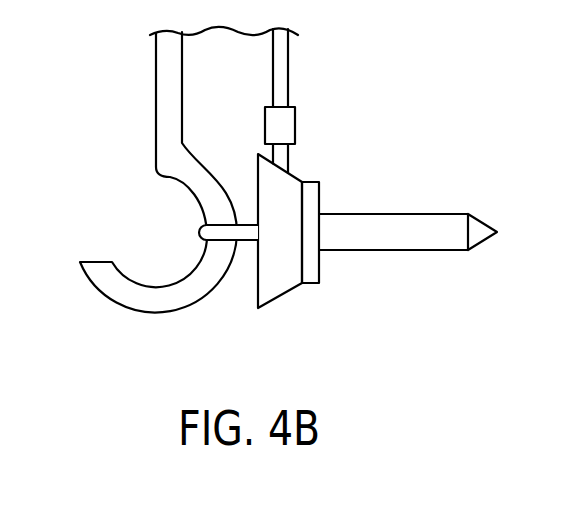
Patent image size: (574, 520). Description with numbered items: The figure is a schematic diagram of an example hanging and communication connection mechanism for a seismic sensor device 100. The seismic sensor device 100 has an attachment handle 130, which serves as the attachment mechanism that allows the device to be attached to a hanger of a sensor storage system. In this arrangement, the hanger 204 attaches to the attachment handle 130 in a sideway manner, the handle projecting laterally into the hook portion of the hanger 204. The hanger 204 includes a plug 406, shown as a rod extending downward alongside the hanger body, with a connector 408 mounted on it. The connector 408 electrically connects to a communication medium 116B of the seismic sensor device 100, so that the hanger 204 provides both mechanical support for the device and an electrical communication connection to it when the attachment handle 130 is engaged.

The seismic sensor device 100 is at (374, 270).
The attachment handle 130 is at (247, 241).
The hanger 204 is at (156, 100).
The plug 406 is at (292, 67).
The connector 408 is at (295, 124).
The communication medium 116B is at (289, 155).